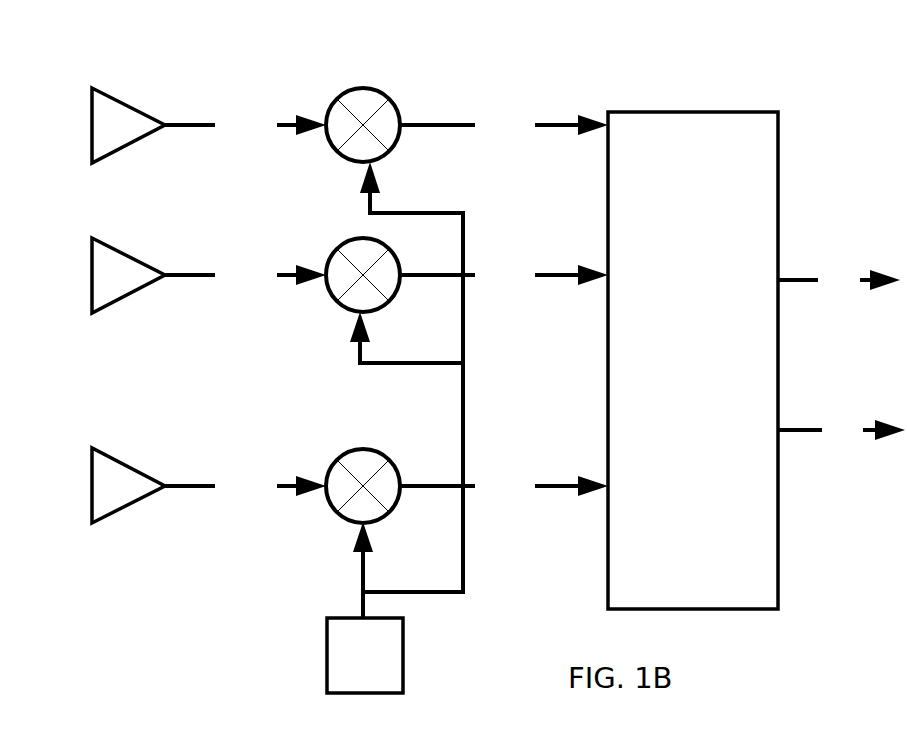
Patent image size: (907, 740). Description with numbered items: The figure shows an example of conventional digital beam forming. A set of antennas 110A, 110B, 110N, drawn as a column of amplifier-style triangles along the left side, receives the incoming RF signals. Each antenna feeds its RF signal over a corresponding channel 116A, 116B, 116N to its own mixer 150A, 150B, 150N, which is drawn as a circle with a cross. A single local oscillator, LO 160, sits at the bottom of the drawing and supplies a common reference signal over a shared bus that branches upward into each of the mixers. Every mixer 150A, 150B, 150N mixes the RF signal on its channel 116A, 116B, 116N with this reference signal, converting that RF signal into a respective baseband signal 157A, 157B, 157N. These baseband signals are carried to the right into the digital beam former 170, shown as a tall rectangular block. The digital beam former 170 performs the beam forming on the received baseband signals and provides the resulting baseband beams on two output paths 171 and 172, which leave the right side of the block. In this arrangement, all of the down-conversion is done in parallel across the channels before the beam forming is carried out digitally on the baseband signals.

The antenna 110A is at (92, 125).
The antenna 110B is at (92, 275).
The antenna 110N is at (92, 486).
The channel 116A is at (245, 125).
The channel 116B is at (245, 275).
The channel 116N is at (245, 486).
The mixer 150A is at (368, 88).
The mixer 150B is at (358, 238).
The mixer 150N is at (363, 449).
The baseband signal 157A is at (504, 125).
The baseband signal 157B is at (504, 275).
The baseband signal 157N is at (504, 486).
The LO 160 is at (327, 675).
The digital beam former 170 is at (751, 112).
The path 171 is at (839, 280).
The path 172 is at (841, 430).